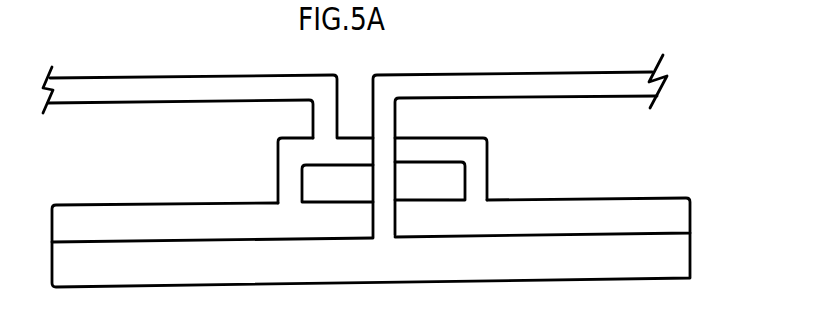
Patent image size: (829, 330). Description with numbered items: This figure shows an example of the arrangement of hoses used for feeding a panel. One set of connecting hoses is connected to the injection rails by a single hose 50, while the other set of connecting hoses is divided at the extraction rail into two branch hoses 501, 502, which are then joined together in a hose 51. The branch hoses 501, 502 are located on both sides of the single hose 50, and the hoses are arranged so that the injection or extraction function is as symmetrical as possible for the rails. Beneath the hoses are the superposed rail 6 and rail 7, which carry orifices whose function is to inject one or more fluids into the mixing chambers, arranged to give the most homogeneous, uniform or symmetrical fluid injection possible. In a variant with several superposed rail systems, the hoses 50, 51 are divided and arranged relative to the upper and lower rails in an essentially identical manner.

The hose 50 is at (135, 76).
The hose 51 is at (522, 73).
The branch hose 502 is at (279, 163).
The branch hose 501 is at (485, 161).
The rail 6 is at (670, 221).
The rail 7 is at (672, 269).